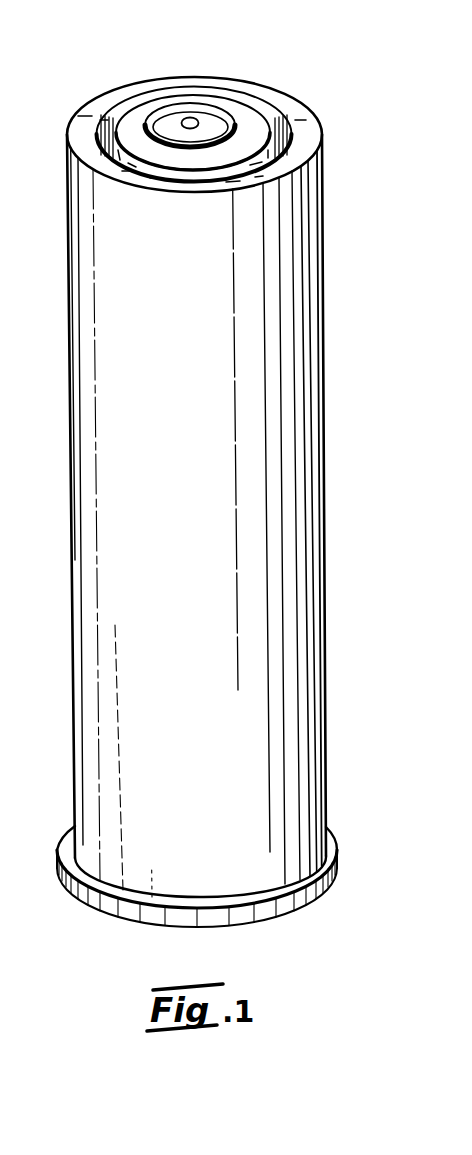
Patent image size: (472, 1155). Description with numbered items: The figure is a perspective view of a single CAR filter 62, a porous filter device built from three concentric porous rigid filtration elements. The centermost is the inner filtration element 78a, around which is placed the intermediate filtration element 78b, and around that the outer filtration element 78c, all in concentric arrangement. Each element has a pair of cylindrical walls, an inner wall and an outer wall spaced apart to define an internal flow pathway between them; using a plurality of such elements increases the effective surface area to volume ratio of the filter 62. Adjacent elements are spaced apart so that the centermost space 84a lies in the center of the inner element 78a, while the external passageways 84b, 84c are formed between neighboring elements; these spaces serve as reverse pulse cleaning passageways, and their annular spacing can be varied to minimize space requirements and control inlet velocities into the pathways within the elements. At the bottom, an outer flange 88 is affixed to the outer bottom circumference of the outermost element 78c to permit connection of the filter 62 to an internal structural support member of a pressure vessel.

The CAR filter 62 is at (223, 471).
The inner filtration element 78a is at (240, 127).
The intermediate filtration element 78b is at (241, 145).
The outer filtration element 78c is at (268, 172).
The centermost space 84a is at (183, 121).
The external passageway 84b is at (205, 106).
The external passageway 84c is at (260, 108).
The outer flange 88 is at (337, 877).